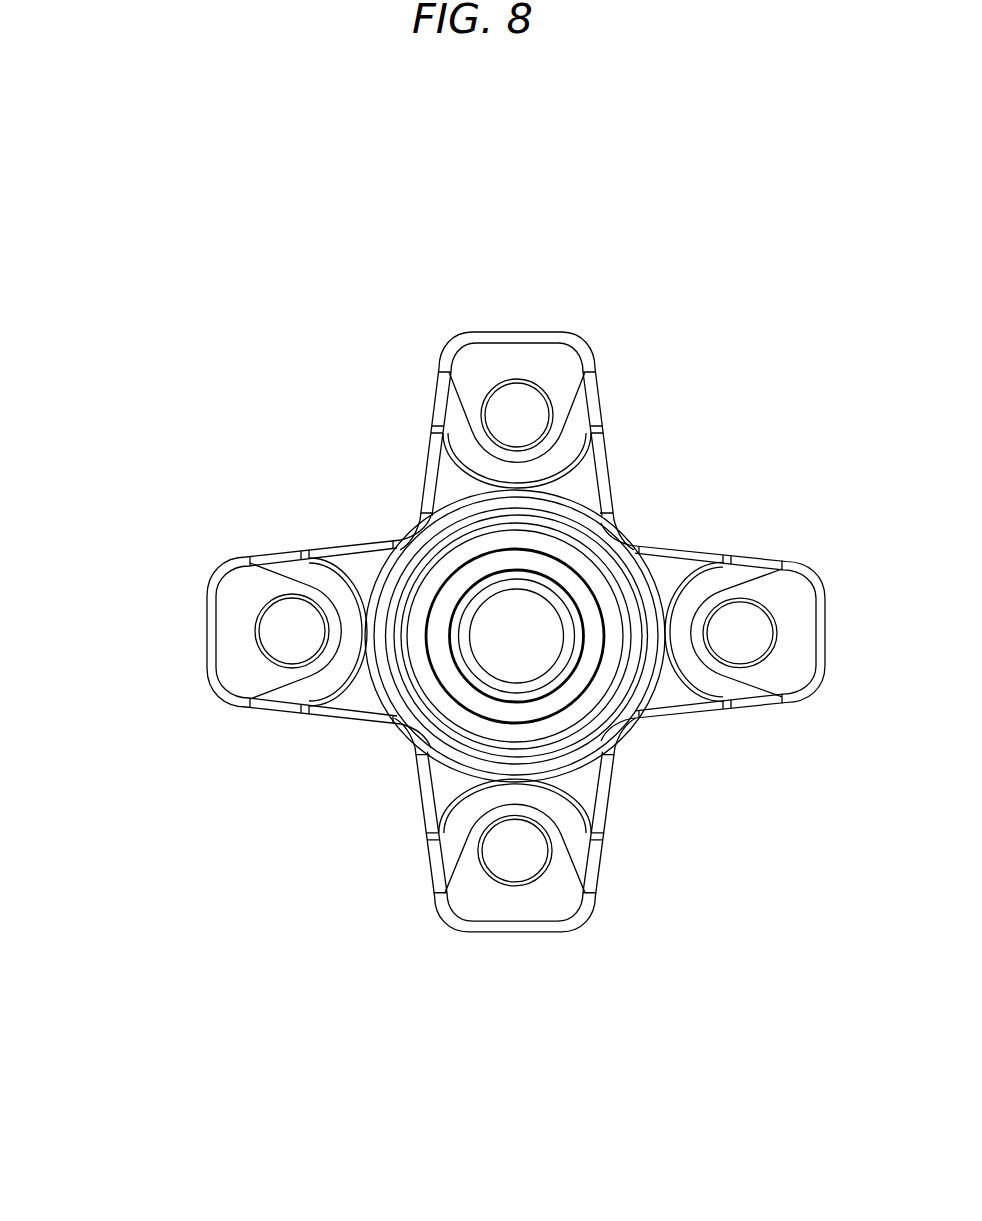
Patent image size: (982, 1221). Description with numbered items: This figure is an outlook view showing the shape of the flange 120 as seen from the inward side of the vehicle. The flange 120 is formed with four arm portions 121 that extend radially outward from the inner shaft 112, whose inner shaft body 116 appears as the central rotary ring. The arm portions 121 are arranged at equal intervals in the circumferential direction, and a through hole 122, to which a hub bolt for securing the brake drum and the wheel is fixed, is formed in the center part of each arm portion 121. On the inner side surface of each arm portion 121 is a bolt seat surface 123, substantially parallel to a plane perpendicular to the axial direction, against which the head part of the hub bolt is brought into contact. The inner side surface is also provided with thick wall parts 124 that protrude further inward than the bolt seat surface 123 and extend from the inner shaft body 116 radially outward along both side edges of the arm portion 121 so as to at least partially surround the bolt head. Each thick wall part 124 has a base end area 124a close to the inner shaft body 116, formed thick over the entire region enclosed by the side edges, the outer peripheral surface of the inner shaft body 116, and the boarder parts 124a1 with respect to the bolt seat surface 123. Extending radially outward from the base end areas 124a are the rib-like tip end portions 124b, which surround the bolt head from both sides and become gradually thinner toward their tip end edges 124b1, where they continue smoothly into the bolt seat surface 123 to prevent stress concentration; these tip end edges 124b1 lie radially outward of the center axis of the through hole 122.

The flange 120 is at (640, 287).
The arm portion 121 is at (519, 326).
The through hole 122 is at (520, 402).
The bolt seat surface 123 is at (482, 372).
The thick wall part 124 is at (424, 438).
The base end area 124a is at (455, 482).
The boarder part 124a1 is at (470, 449).
The tip end portion 124b is at (440, 407).
The tip end edge 124b1 is at (445, 370).
The inner shaft body 116 is at (619, 734).
The inner shaft 112 is at (517, 636).